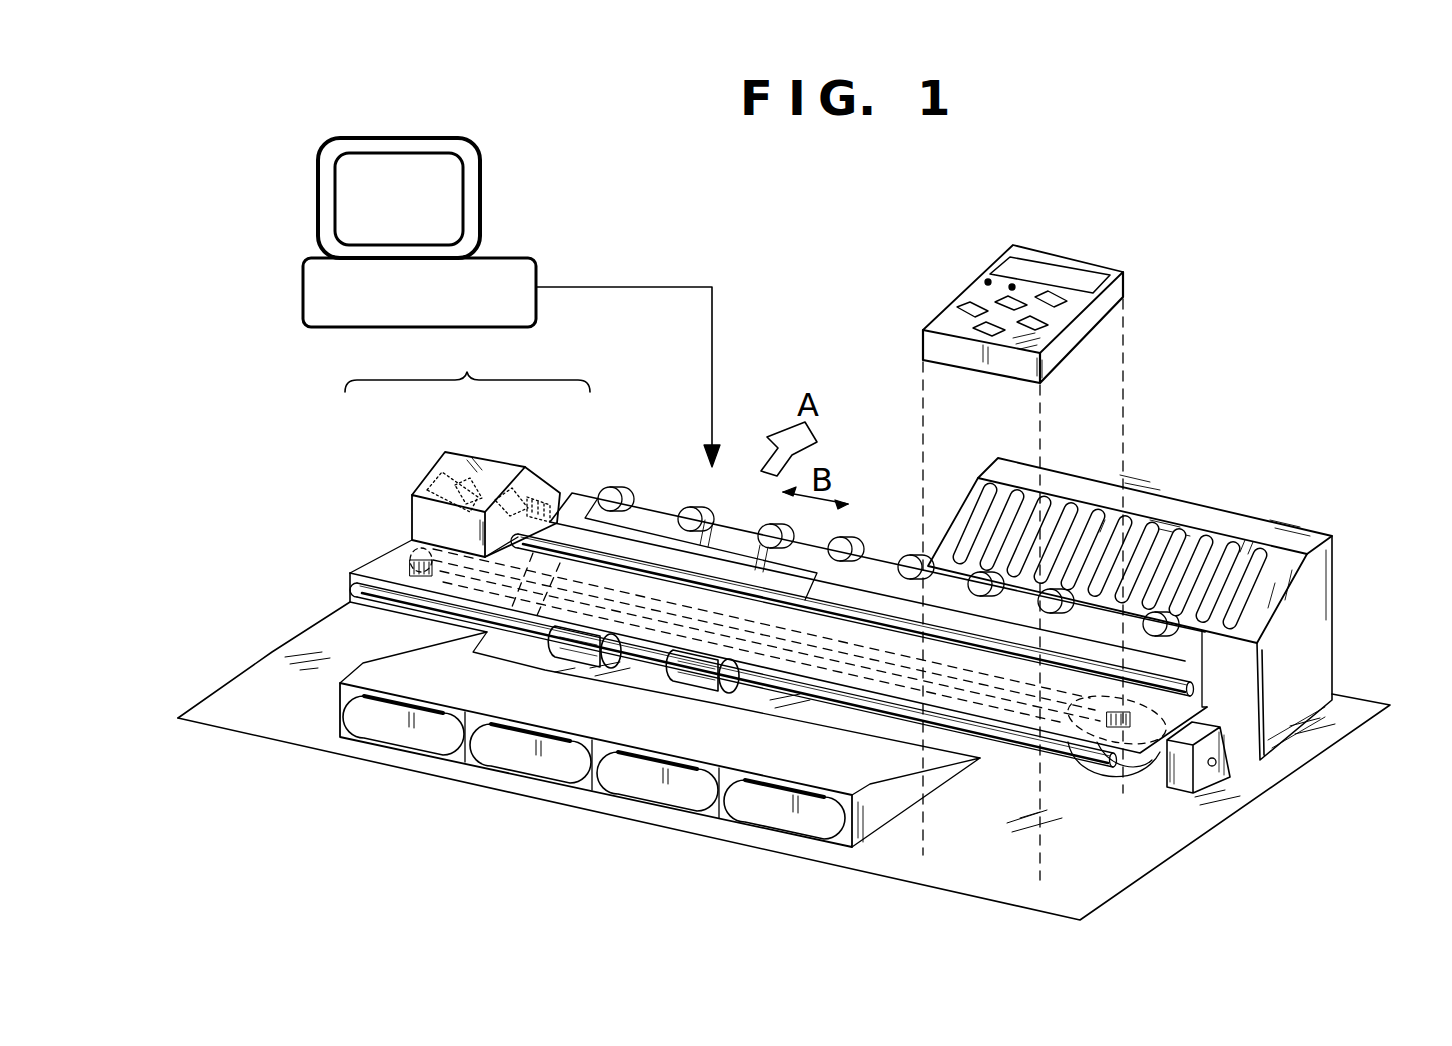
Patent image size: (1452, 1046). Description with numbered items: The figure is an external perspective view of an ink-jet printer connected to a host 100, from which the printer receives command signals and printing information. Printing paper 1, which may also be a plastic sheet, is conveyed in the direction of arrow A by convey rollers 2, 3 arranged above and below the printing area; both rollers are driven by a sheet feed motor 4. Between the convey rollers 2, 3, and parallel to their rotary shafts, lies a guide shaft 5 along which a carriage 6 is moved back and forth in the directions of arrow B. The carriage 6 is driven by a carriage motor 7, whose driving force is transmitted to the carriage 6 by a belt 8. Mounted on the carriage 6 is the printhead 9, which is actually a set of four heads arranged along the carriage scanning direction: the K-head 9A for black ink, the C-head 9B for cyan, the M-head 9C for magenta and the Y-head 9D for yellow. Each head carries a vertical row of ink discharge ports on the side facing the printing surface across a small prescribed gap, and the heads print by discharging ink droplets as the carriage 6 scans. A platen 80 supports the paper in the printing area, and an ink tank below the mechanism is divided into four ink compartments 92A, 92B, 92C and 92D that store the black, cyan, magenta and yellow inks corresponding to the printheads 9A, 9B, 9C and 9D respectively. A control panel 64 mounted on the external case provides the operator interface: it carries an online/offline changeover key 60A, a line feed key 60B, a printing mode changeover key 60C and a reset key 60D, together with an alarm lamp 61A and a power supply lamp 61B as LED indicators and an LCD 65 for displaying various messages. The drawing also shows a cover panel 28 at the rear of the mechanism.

The host 100 is at (516, 272).
The printhead 9 is at (467, 362).
The printhead (K-head) 9A is at (528, 502).
The printhead (C-head) 9B is at (490, 493).
The printhead (M-head) 9C is at (458, 480).
The printhead (Y-head) 9D is at (425, 490).
The carriage 6 is at (420, 518).
The printing paper 1 is at (645, 543).
The convey roller 2 is at (837, 548).
The convey roller 3 is at (718, 690).
The guide shaft 5 is at (1185, 675).
The cover panel 28 is at (1185, 508).
The platen 80 is at (1205, 638).
The sheet feed motor 4 is at (1213, 777).
The carriage motor 7 is at (1143, 757).
The belt 8 is at (1068, 757).
The ink compartment 92A is at (787, 818).
The ink compartment 92B is at (652, 790).
The ink compartment 92C is at (532, 760).
The ink compartment 92D is at (408, 735).
The control panel 64 is at (1115, 293).
The LCD 65 is at (1017, 307).
The alarm lamp 61A is at (1012, 286).
The power supply lamp 61B is at (988, 282).
The online/offline changeover key 60A is at (1057, 300).
The line feed key 60B is at (1025, 298).
The printing mode changeover key 60C is at (1027, 320).
The reset key 60D is at (973, 324).